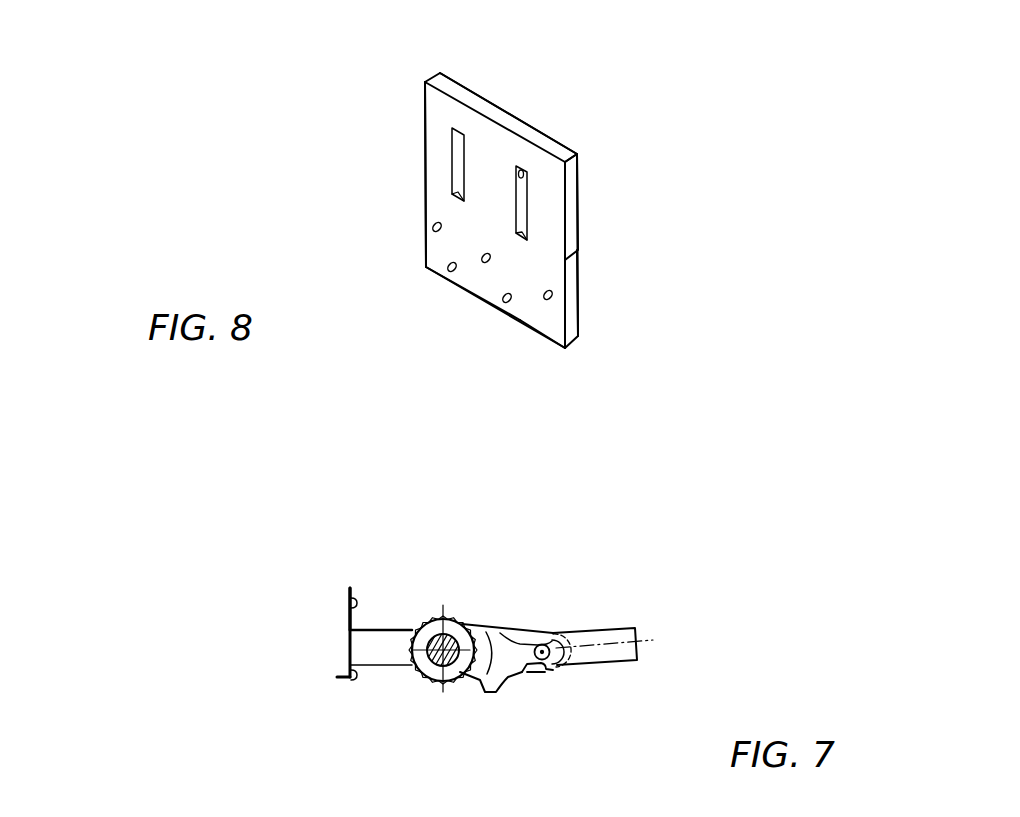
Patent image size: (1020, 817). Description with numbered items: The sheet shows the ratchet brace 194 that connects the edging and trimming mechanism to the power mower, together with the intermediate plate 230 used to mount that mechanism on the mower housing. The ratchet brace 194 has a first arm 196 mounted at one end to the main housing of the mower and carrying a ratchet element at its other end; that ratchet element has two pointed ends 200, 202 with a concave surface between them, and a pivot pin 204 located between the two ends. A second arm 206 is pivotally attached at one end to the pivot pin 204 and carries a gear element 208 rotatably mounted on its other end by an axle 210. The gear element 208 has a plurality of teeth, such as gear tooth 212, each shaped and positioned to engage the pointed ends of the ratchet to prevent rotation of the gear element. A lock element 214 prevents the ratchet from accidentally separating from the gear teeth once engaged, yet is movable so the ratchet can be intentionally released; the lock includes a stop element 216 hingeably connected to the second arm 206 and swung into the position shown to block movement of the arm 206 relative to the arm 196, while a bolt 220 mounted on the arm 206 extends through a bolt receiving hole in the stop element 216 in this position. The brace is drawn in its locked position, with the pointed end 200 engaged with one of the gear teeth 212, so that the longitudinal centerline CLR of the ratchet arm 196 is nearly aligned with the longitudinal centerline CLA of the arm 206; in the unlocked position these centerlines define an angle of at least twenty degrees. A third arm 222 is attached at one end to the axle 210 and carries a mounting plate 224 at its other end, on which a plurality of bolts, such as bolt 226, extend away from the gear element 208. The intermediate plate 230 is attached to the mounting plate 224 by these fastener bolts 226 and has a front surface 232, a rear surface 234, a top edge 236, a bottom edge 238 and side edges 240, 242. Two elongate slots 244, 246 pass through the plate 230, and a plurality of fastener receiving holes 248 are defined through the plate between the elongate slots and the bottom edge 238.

In FIG. 7, the ratchet brace 194 is at (552, 566).
In FIG. 7, the first arm 196 is at (605, 628).
In FIG. 7, the pointed end 200 is at (475, 627).
In FIG. 7, the pointed end 202 is at (487, 690).
In FIG. 7, the pivot pin 204 is at (550, 667).
In FIG. 7, the second arm 206 is at (528, 628).
In FIG. 7, the gear element 208 is at (432, 615).
In FIG. 7, the axle 210 is at (432, 670).
In FIG. 7, the gear tooth 212 is at (447, 608).
In FIG. 7, the lock element 214 is at (523, 680).
In FIG. 7, the stop element 216 is at (536, 686).
In FIG. 7, the bolt 220 is at (563, 663).
In FIG. 7, the third arm 222 is at (357, 668).
In FIG. 7, the mounting plate 224 is at (352, 593).
In FIG. 7, the bolt 226 is at (350, 602).
In FIG. 7, the longitudinal centerline of the second arm CLA is at (372, 668).
In FIG. 7, the longitudinal centerline of the ratchet arm CLR is at (668, 628).
In FIG. 8, the intermediate plate 230 is at (460, 77).
In FIG. 8, the front surface 232 is at (540, 317).
In FIG. 8, the rear surface 234 is at (580, 297).
In FIG. 8, the top edge 236 is at (512, 112).
In FIG. 8, the bottom edge 238 is at (462, 290).
In FIG. 8, the side edge 240 is at (577, 198).
In FIG. 8, the side edge 242 is at (423, 103).
In FIG. 8, the elongate slot 244 is at (520, 170).
In FIG. 8, the elongate slot 246 is at (453, 170).
In FIG. 8, the fastener receiving holes 248 is at (448, 266).